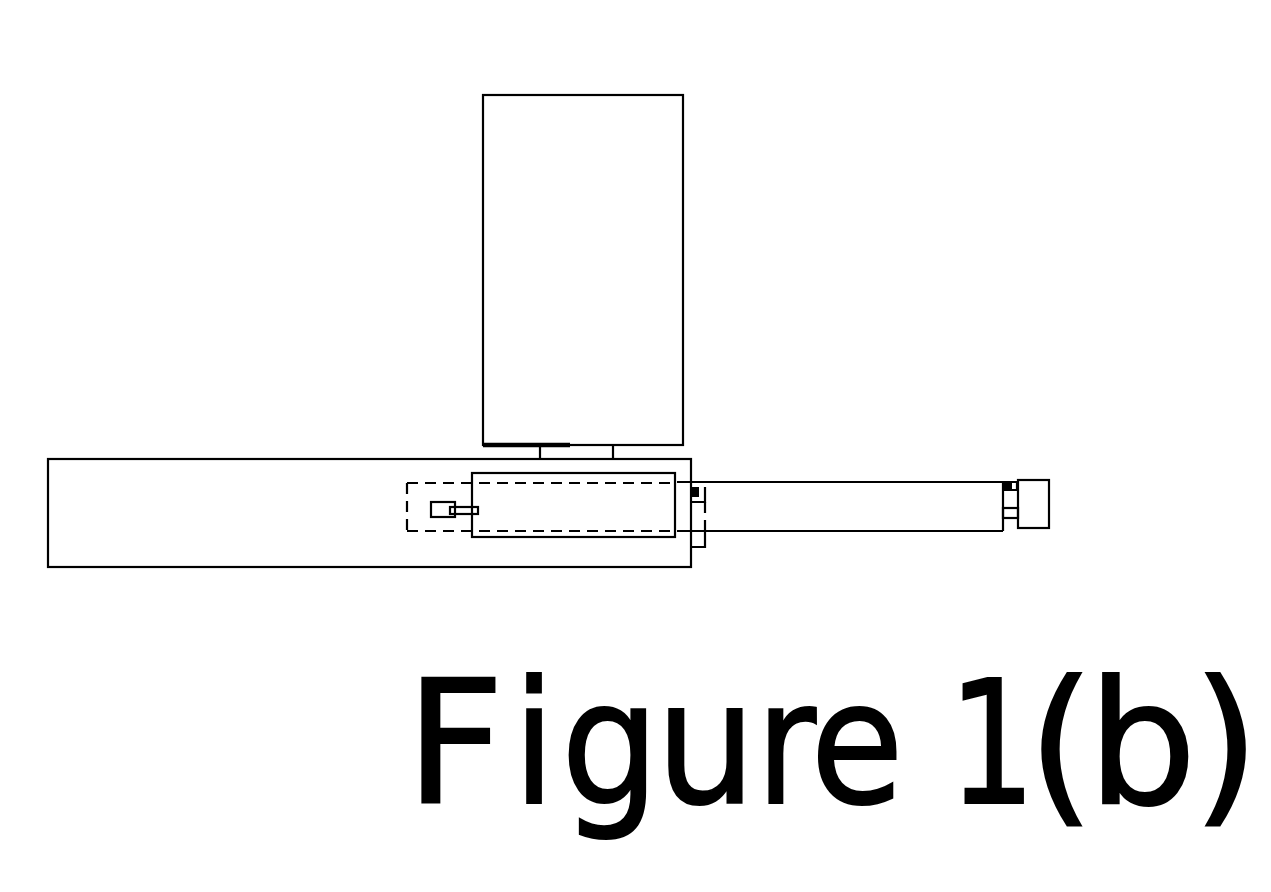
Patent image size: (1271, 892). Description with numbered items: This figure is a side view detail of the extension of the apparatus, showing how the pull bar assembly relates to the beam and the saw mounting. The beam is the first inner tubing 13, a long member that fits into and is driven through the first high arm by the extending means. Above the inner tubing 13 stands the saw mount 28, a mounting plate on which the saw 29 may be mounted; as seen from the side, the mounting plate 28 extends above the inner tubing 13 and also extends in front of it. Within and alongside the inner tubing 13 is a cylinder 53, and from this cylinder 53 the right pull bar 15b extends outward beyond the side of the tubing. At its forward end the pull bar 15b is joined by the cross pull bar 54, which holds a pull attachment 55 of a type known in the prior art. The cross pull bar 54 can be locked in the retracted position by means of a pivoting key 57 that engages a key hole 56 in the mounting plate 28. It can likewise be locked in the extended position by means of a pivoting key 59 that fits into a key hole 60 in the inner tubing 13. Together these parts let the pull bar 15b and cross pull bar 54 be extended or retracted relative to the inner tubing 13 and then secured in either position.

The first inner tubing 13 is at (67, 484).
The right pull bar 15b is at (795, 497).
The saw mount 28 is at (492, 446).
The saw 29 is at (603, 183).
The cylinder 53 is at (631, 537).
The cross pull bar 54 is at (1015, 518).
The pull attachment 55 is at (1035, 497).
The key hole 56 is at (698, 487).
The key 57 is at (1010, 488).
The key 59 is at (470, 514).
The key hole 60 is at (445, 510).